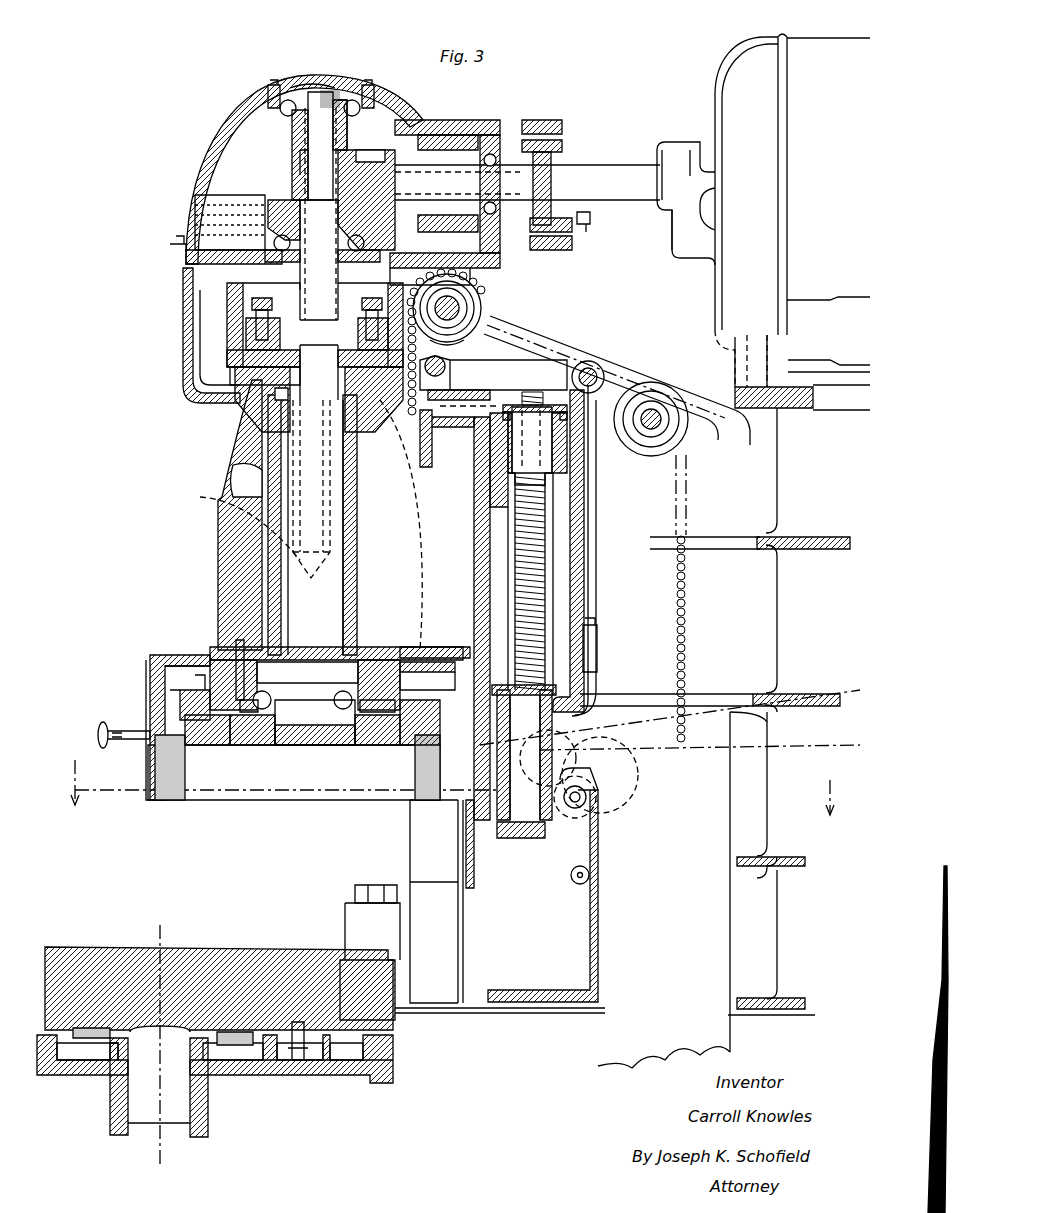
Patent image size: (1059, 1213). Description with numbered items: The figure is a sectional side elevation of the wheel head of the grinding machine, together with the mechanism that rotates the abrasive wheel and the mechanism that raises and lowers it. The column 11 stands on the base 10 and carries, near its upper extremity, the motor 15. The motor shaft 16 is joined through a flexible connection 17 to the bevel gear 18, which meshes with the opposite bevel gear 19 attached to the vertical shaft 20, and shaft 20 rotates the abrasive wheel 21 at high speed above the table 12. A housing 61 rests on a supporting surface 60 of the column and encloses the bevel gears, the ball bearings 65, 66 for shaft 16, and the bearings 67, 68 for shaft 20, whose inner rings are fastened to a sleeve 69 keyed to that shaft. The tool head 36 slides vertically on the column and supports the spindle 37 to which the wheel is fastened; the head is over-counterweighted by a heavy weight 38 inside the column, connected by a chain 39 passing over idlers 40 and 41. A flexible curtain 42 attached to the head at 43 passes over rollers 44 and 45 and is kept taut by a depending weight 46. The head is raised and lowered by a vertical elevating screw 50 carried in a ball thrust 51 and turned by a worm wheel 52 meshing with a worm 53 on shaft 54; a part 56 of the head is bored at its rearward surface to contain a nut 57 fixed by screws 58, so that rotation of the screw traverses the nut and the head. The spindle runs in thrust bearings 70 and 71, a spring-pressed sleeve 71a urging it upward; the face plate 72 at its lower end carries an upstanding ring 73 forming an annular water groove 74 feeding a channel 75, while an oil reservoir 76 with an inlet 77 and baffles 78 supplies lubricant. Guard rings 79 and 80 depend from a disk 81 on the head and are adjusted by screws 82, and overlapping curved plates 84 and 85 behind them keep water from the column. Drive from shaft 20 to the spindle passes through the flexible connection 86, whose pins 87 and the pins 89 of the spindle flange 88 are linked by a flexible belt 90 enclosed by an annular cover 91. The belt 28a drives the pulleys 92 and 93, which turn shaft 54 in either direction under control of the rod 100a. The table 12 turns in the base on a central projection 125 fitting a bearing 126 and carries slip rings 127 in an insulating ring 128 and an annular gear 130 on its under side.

The base 10 is at (396, 1062).
The column 11 is at (183, 305).
The table 12 is at (180, 957).
The motor 15 is at (795, 48).
The shaft 16 is at (628, 178).
The flexible connection 17 is at (552, 140).
The bevel gear 18 is at (368, 162).
The bevel gear 19 is at (278, 209).
The vertical shaft 20 is at (302, 250).
The abrasive wheel 21 is at (300, 798).
The belt 28a is at (850, 700).
The tool carriage or head 36 is at (268, 440).
The spindle 37 is at (290, 600).
The weight 38 is at (718, 935).
The chain 39 is at (686, 596).
The idler 40 is at (470, 318).
The idler 41 is at (672, 443).
The flexible curtain 42 is at (590, 519).
The curtain attachment 43 is at (432, 430).
The rod or roller 44 is at (450, 371).
The rod or roller 45 is at (571, 377).
The weight 46 is at (598, 658).
The elevating screw 50 is at (540, 590).
The ball thrust 51 is at (500, 805).
The worm wheel 52 is at (498, 842).
The worm 53 is at (586, 805).
The shaft 54 is at (590, 814).
The screw bearing 56 is at (562, 477).
The nut 57 is at (490, 478).
The screws 58 is at (500, 406).
The supporting surface 60 is at (176, 250).
The housing 61 is at (228, 118).
The ball bearing 65 is at (398, 132).
The ball bearing 66 is at (492, 136).
The bearing 67 is at (282, 116).
The bearing 68 is at (235, 210).
The sleeve 69 is at (294, 146).
The thrust bearing 70 is at (352, 682).
The thrust bearing 71 is at (268, 415).
The spring pressed sleeve 71a is at (255, 425).
The flange or face plate 72 is at (262, 740).
The upstanding ring 73 is at (355, 745).
The annular groove 74 is at (378, 742).
The channel 75 is at (400, 750).
The oil reservoir 76 is at (240, 740).
The inlet 77 is at (196, 688).
The baffles or veins 78 is at (238, 650).
The annular ring 79 is at (150, 674).
The annular ring 80 is at (146, 760).
The disk 81 is at (452, 672).
The screws 82 is at (106, 731).
The curved plate 84 is at (458, 861).
The curved plate 85 is at (457, 930).
The flexible connection 86 is at (258, 320).
The pins 87 is at (447, 344).
The flange 88 is at (248, 358).
The pins 89 is at (262, 335).
The flexible belt 90 is at (240, 378).
The annular cover 91 is at (226, 300).
The pulley 92 is at (624, 770).
The pulley 93 is at (548, 758).
The rod 100a is at (578, 884).
The central projection 125 is at (180, 1132).
The bearing 126 is at (110, 1105).
The slip rings 127 is at (235, 1050).
The insulating ring 128 is at (245, 1015).
The gear 130 is at (298, 1062).